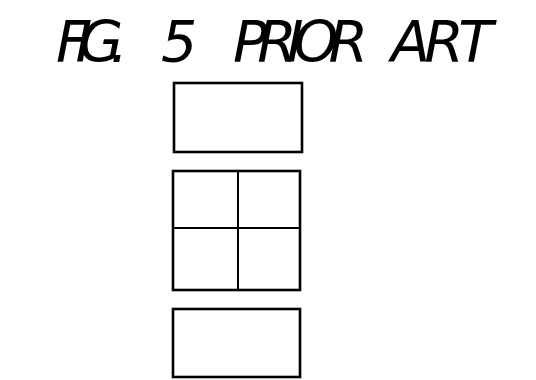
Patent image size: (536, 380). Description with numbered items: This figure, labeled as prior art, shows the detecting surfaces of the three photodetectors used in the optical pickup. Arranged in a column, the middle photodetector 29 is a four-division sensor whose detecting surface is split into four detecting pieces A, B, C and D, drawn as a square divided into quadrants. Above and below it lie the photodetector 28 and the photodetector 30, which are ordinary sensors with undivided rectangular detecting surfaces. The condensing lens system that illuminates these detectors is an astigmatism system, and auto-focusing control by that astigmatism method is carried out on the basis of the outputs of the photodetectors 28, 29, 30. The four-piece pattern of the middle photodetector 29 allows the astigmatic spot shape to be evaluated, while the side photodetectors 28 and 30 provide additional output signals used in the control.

The photodetector 28 is at (302, 108).
The middle photodetector 29 is at (300, 198).
The photodetector 30 is at (300, 340).